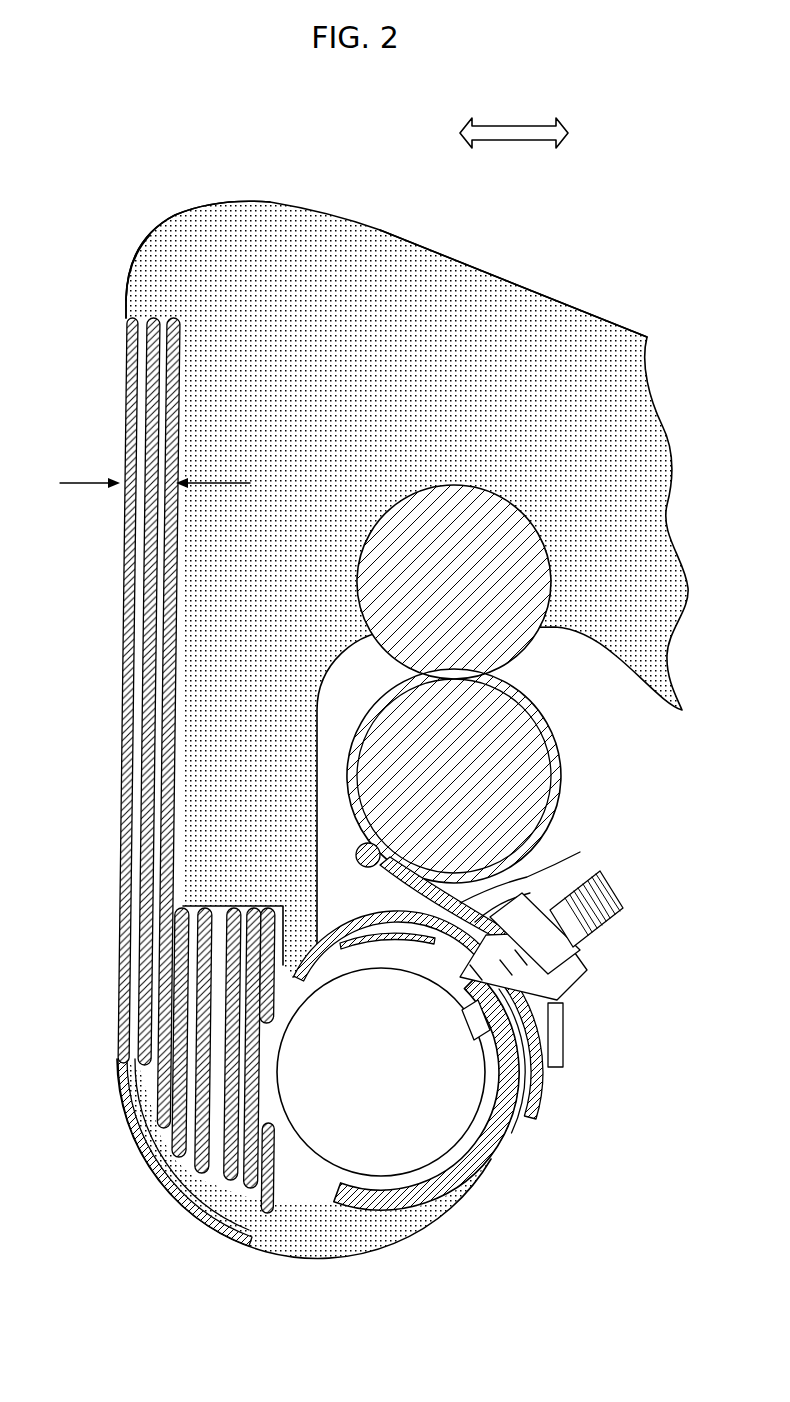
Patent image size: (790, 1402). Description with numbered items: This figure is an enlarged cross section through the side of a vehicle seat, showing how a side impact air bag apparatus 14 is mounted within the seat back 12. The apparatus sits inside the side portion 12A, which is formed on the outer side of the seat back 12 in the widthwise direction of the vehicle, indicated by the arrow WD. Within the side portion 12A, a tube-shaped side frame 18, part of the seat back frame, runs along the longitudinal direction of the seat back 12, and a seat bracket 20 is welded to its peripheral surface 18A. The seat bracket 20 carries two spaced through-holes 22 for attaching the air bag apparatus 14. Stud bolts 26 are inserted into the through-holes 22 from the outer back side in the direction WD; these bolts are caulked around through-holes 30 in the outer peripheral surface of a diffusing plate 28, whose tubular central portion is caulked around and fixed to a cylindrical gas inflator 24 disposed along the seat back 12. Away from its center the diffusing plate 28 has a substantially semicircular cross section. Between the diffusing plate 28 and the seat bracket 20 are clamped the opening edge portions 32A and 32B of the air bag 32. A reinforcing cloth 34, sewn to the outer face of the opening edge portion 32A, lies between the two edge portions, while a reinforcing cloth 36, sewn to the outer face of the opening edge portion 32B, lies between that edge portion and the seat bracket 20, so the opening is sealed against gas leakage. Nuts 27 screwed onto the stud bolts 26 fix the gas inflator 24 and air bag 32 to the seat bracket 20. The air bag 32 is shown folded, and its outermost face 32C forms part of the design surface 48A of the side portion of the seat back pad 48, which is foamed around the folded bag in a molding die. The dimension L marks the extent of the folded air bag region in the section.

The seat back 12 is at (588, 304).
The side portion 12A is at (474, 246).
The seat back pad 48 is at (196, 209).
The design surface 48A is at (132, 266).
The side impact air bag apparatus 14 is at (106, 1079).
The air bag 32 is at (106, 725).
The outermost face 32C is at (121, 566).
The opening edge portion 32A is at (380, 947).
The opening edge portion 32B is at (540, 1104).
The side frame 18 is at (574, 748).
The peripheral surface 18A is at (418, 672).
The seat bracket 20 is at (560, 855).
The through-hole 22 is at (576, 975).
The gas inflator 24 is at (505, 1130).
The stud bolt 26 is at (627, 889).
The nut 27 is at (530, 896).
The diffusing plate 28 is at (470, 1192).
The through-hole 30 is at (476, 1018).
The reinforcing cloth 34 is at (546, 1076).
The reinforcing cloth 36 is at (565, 1050).
The length dimension L is at (155, 496).
The widthwise direction of the vehicle WD is at (510, 126).